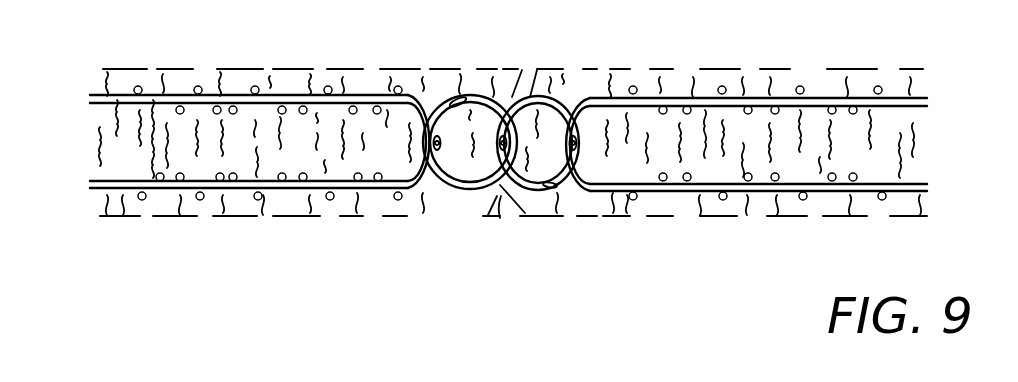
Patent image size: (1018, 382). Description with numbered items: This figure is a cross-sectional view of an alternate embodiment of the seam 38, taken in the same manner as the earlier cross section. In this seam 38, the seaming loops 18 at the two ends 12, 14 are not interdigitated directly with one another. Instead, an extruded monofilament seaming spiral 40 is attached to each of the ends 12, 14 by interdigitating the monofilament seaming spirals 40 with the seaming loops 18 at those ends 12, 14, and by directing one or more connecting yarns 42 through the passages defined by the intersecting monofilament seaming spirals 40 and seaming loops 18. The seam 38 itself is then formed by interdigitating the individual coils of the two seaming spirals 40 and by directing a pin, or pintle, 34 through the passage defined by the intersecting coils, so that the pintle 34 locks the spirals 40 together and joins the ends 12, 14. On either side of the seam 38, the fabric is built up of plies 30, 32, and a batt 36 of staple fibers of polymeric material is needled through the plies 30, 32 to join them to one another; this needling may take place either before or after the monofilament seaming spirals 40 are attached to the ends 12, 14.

The end 12 is at (356, 93).
The end 14 is at (662, 88).
The seaming loop 18 is at (415, 188).
The ply 30 is at (88, 88).
The ply 32 is at (88, 178).
The pintle 34 is at (507, 186).
The batt 36 is at (234, 70).
The seam 38 is at (600, 65).
The monofilament seaming spiral 40 is at (576, 100).
The connecting yarn 42 is at (447, 172).